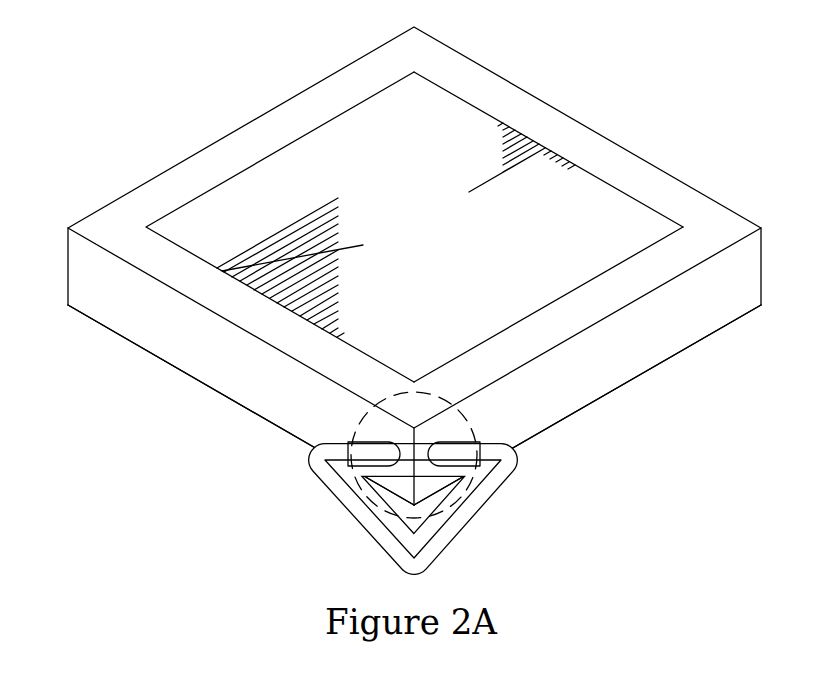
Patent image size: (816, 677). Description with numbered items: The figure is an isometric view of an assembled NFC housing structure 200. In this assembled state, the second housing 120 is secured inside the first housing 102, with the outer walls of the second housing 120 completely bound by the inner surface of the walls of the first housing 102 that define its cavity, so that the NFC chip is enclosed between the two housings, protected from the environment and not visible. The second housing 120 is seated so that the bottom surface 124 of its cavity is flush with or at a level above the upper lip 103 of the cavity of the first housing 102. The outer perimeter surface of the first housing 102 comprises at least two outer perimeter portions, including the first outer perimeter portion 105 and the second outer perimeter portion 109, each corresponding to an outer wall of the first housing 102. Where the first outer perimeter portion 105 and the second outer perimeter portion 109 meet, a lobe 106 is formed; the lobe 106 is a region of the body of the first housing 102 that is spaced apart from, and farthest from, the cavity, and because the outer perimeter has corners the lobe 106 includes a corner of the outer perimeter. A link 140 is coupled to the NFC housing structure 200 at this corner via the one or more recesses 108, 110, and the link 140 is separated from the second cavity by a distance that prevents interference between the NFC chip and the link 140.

The NFC housing structure 200 is at (397, 298).
The first housing 102 is at (197, 151).
The bottom surface of the second cavity 124 is at (330, 138).
The upper lip of the first cavity 103 is at (487, 108).
The second housing 120 is at (589, 195).
The first outer perimeter portion 105 is at (233, 374).
The second outer perimeter portion 109 is at (614, 362).
The lobe 106 is at (391, 392).
The recess 108 is at (386, 442).
The recess 110 is at (442, 442).
The link 140 is at (412, 439).